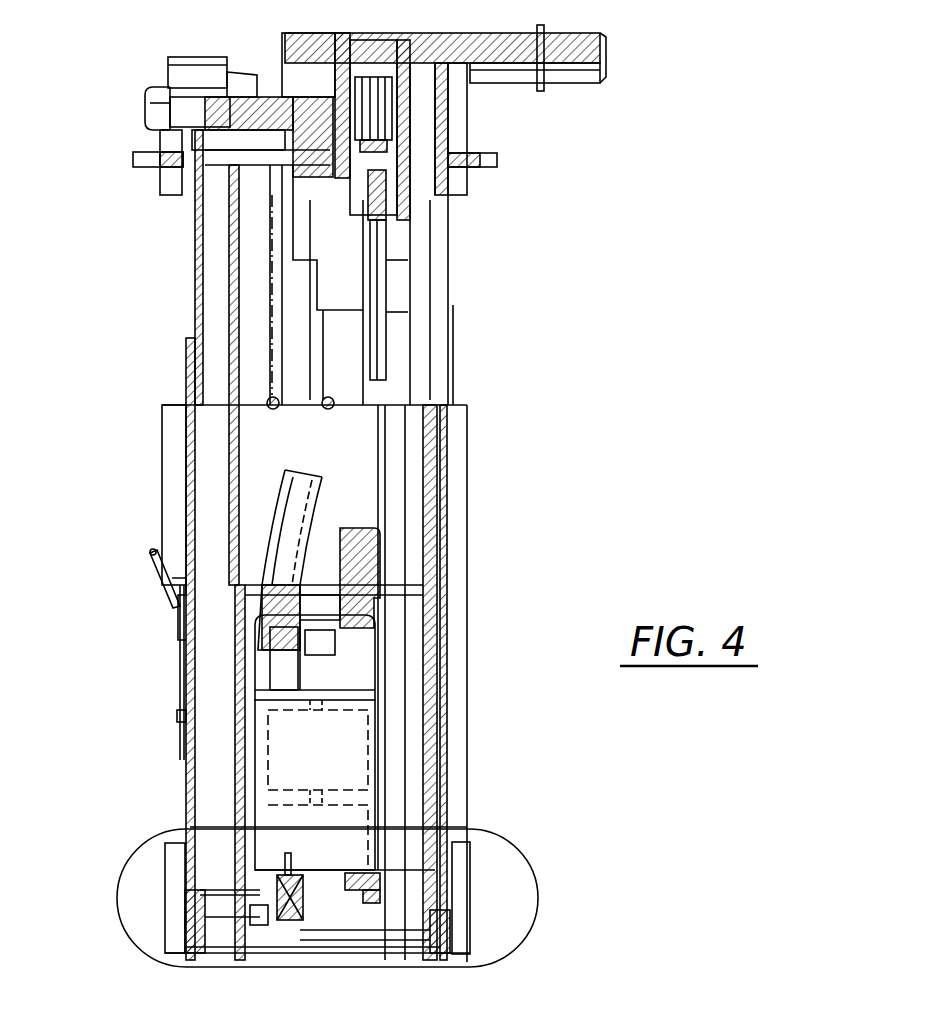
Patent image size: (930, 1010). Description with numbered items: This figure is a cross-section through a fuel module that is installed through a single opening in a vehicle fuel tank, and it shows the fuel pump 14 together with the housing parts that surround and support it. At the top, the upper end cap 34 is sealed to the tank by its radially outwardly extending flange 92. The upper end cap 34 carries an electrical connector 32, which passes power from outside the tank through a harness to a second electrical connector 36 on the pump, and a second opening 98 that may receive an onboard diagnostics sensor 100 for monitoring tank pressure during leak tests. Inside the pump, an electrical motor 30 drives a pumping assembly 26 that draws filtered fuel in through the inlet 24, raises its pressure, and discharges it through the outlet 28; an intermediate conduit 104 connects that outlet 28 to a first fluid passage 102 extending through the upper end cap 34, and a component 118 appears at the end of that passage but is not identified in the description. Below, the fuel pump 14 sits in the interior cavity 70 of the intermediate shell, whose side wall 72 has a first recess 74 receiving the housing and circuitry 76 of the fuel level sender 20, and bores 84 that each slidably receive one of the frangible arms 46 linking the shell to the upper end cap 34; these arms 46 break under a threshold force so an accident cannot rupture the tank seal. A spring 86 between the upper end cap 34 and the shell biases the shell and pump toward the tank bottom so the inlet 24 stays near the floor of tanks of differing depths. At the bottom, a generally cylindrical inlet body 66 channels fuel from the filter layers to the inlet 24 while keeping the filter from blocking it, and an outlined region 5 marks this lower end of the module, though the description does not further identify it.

The detail area of FIG. 5 is at (540, 880).
The fuel pump 14 is at (385, 770).
The fuel level sender 20 is at (170, 611).
The inlet 24 is at (280, 925).
The pumping assembly 26 is at (420, 828).
The outlet 28 is at (278, 662).
The electrical motor 30 is at (362, 737).
The electrical connector 32 is at (193, 57).
The upper end cap 34 is at (477, 123).
The second electrical connector 36 is at (372, 540).
The frangible arms 46 is at (195, 233).
The inlet body 66 is at (253, 915).
The interior cavity 70 is at (232, 770).
The side wall 72 is at (162, 488).
The first recess 74 is at (185, 728).
The housing and circuitry 76 is at (180, 645).
The bores 84 is at (200, 397).
The spring 86 is at (270, 261).
The flange 92 is at (134, 158).
The second opening 98 is at (302, 92).
The OBD sensor 100 is at (146, 103).
The first fluid passage 102 is at (598, 52).
The intermediate conduit 104 is at (325, 497).
The retaining ring 118 is at (592, 33).